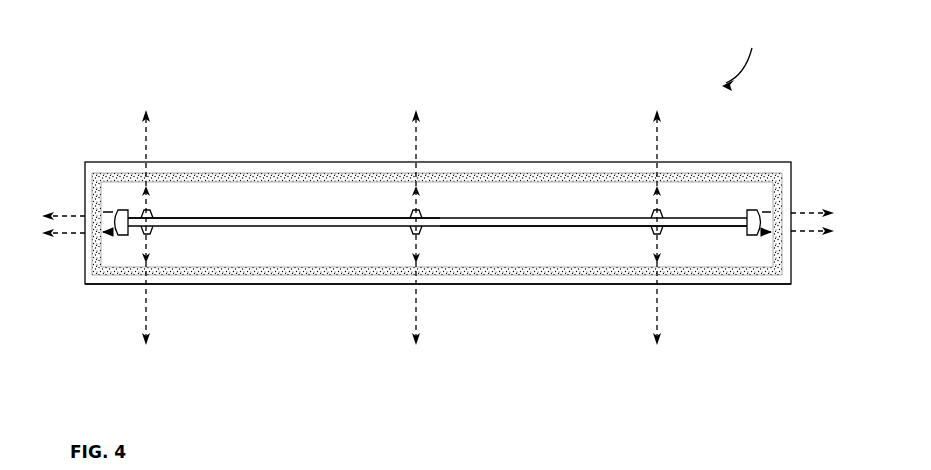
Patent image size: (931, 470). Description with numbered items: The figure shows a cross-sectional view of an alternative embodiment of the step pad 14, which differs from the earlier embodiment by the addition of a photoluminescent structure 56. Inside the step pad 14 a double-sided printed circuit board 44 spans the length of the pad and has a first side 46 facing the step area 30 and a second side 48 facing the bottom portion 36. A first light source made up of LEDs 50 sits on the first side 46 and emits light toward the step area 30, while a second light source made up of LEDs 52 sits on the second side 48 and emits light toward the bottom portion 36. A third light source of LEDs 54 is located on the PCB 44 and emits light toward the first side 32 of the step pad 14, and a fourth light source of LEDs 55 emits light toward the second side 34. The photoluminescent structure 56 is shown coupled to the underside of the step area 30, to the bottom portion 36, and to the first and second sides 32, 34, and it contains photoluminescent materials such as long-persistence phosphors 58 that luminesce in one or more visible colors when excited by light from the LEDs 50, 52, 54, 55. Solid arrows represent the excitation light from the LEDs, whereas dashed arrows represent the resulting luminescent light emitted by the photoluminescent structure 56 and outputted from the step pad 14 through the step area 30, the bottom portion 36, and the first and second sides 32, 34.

The step pad 14 is at (746, 59).
The step area 30 is at (487, 162).
The first side 32 is at (92, 195).
The second side 34 is at (782, 192).
The bottom portion 36 is at (373, 284).
The double-sided printed circuit board 44 is at (556, 218).
The first side of the PCB 46 is at (277, 216).
The second side of the PCB 48 is at (277, 230).
The light-emitting diodes 50 is at (151, 212).
The light-emitting diodes 52 is at (152, 236).
The light-emitting diodes 54 is at (121, 210).
The light-emitting diodes 55 is at (750, 210).
The photoluminescent structure 56 is at (327, 181).
The long-persistence phosphors 58 is at (540, 275).